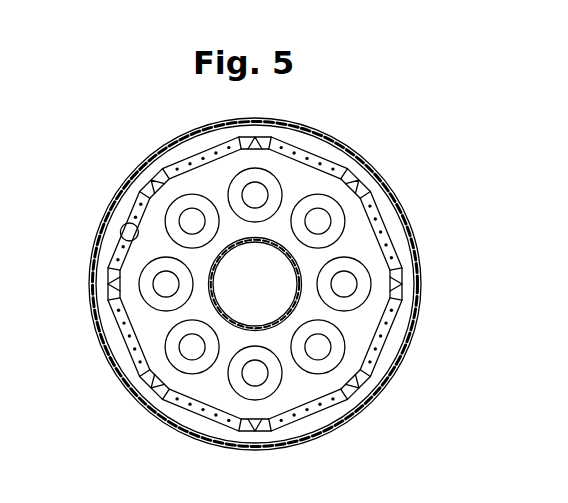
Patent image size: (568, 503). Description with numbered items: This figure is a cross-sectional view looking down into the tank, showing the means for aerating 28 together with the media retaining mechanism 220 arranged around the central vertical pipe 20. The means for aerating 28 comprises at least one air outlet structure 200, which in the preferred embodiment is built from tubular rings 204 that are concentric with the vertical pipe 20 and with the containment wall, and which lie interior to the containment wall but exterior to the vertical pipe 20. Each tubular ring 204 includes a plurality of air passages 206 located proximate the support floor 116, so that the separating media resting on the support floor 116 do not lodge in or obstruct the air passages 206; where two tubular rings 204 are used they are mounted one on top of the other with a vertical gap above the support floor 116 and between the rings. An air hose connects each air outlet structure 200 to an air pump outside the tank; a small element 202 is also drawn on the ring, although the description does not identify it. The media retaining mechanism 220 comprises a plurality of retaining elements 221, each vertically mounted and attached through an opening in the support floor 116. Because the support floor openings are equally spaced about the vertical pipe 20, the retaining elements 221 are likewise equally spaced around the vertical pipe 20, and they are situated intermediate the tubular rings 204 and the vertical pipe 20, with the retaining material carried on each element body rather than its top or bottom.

The vertical pipe 20 is at (300, 293).
The means for aerating 28 is at (418, 139).
The support floor 116 is at (397, 227).
The air outlet structure 200 is at (386, 323).
The locating pin 202 is at (120, 233).
The tubular ring 204 is at (190, 428).
The air passages 206 is at (390, 260).
The media retaining mechanism 220 is at (233, 178).
The retaining elements 221 is at (327, 197).